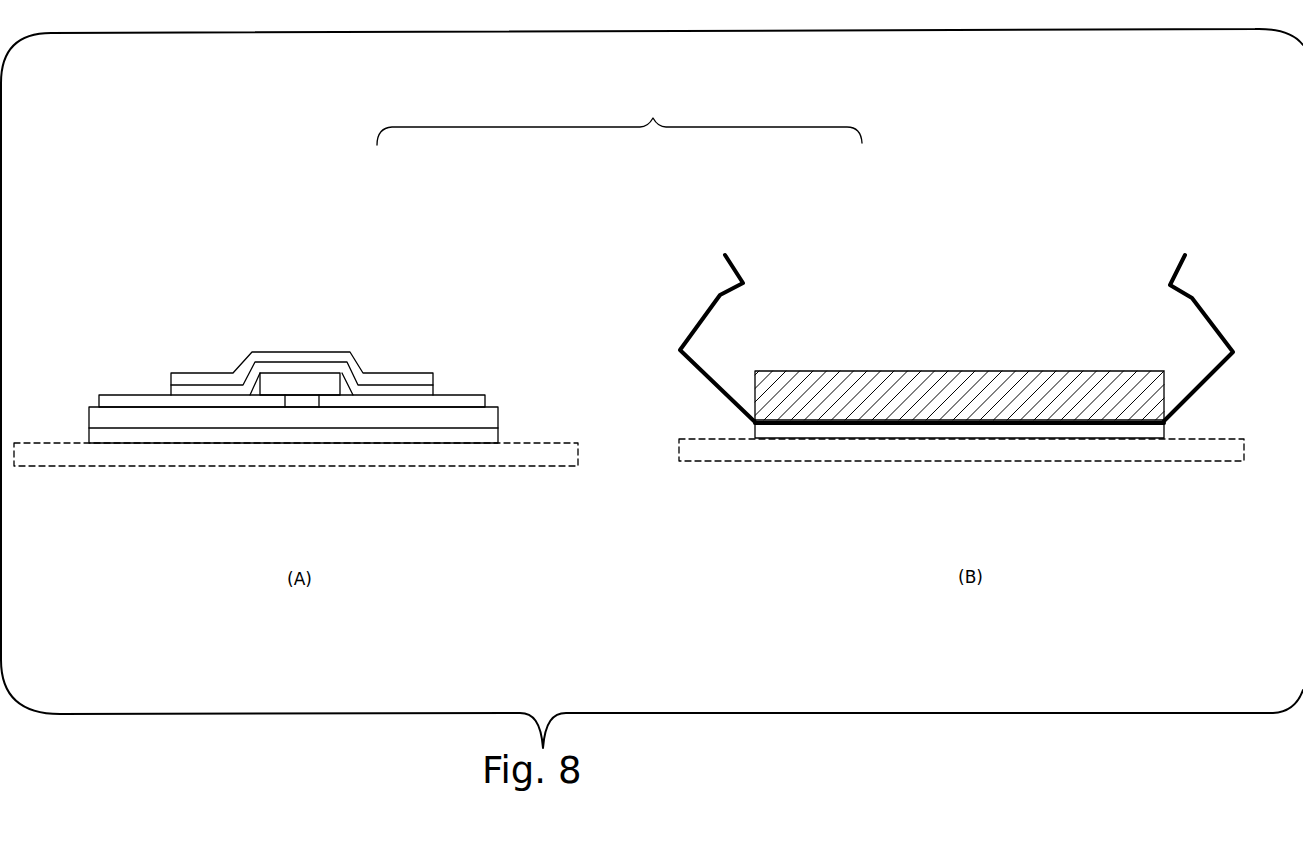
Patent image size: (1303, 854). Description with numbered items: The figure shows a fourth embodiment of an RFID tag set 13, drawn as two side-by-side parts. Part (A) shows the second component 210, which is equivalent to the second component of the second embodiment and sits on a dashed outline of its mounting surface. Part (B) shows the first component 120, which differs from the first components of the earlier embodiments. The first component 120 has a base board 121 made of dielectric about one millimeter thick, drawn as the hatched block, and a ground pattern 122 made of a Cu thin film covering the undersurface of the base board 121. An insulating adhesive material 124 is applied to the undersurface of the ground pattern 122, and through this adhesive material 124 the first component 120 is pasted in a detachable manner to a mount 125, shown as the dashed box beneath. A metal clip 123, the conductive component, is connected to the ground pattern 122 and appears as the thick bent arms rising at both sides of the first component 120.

The RFID tag set 13 is at (619, 119).
The second component 210 is at (376, 230).
The first component 120 is at (979, 339).
The base board 121 is at (924, 371).
The ground pattern 122 is at (1067, 415).
The metal clip 123 is at (707, 310).
The adhesive material 124 is at (1150, 429).
The mount 125 is at (1063, 461).